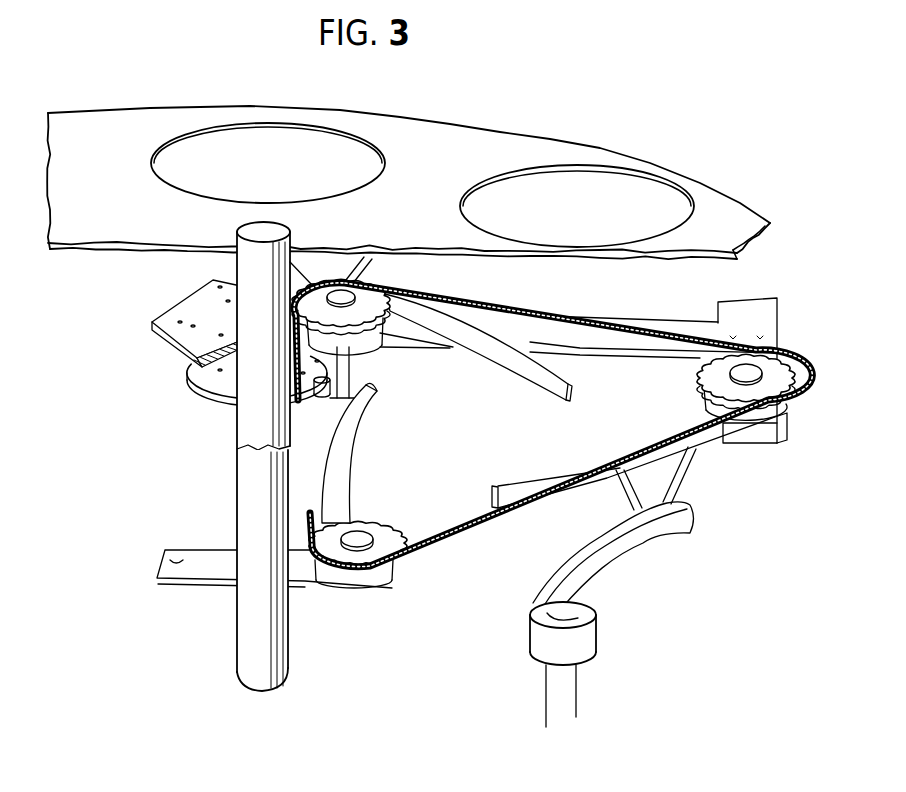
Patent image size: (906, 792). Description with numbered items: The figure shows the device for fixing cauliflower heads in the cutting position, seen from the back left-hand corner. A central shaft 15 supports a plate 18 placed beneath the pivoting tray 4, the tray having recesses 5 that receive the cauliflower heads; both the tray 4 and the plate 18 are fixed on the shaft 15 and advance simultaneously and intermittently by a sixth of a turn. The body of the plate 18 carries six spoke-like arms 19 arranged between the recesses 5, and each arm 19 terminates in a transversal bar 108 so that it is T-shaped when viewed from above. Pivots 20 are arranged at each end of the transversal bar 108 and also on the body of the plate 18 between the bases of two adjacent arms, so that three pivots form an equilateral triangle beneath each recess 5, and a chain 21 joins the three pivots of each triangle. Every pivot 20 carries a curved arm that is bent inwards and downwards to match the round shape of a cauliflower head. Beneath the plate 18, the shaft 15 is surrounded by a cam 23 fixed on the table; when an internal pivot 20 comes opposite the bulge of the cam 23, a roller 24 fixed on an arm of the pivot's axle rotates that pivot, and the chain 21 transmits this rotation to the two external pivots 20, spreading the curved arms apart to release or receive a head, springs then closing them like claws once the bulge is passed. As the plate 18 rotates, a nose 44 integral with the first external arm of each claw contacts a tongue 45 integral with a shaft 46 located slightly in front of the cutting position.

The pivoting tray 4 is at (470, 135).
The recess 5 is at (603, 197).
The shaft 15 is at (250, 640).
The plate 18 is at (193, 333).
The arm 19 is at (670, 327).
The pivot 20 is at (348, 300).
The chain 21 is at (450, 548).
The cam 23 is at (233, 395).
The roller 24 is at (322, 398).
The nose 44 is at (660, 475).
The tongue 45 is at (597, 563).
The shaft 46 is at (570, 697).
The transversal bar 108 is at (752, 312).